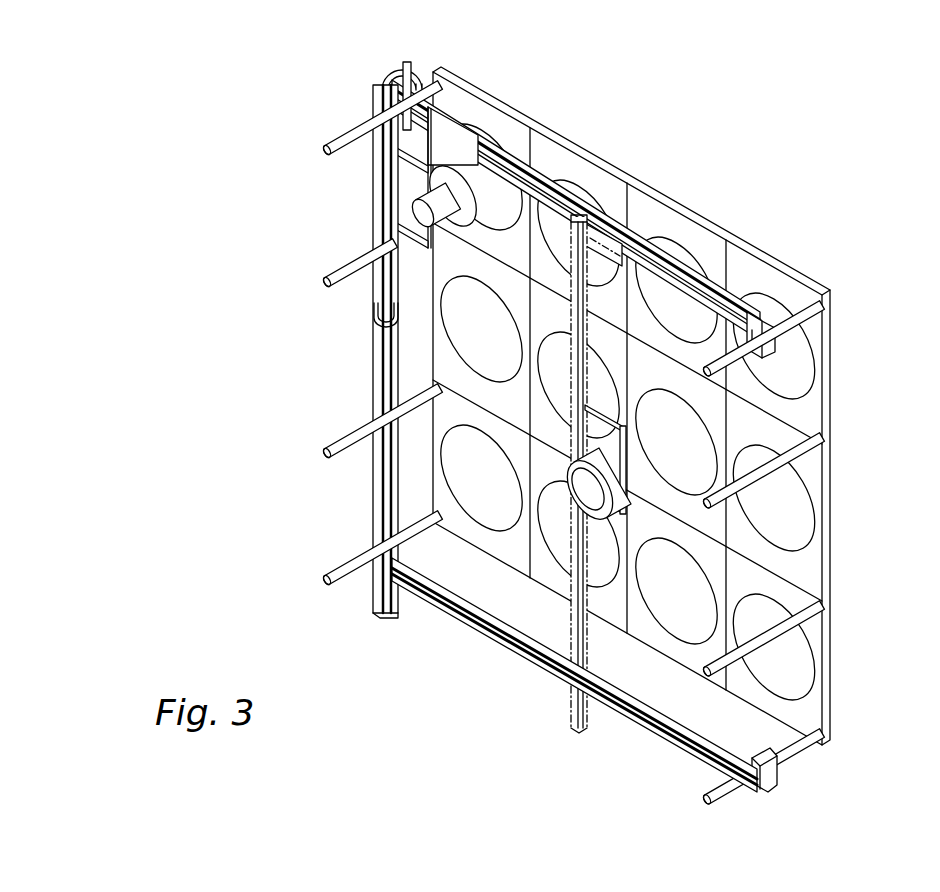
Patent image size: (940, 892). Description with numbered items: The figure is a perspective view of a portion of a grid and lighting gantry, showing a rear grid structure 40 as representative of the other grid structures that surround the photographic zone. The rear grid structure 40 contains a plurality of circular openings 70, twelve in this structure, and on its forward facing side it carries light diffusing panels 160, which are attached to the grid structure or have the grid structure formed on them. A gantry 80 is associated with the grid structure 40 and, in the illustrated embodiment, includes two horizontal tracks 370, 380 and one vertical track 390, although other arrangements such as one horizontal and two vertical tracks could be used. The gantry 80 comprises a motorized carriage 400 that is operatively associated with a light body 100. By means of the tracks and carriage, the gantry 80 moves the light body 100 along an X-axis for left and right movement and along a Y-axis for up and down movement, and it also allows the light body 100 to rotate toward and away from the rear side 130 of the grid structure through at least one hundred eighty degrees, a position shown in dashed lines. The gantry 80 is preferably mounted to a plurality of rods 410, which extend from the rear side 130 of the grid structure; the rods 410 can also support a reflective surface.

The rear grid structure 40 is at (807, 415).
The openings 70 is at (808, 542).
The gantry 80 is at (556, 150).
The light body 100 is at (463, 192).
The rear side of the grid structure 130 is at (672, 374).
The light diffusing panels 160 is at (792, 505).
The horizontal track 370 is at (700, 277).
The horizontal track 380 is at (670, 740).
The vertical track 390 is at (378, 373).
The motorized carriage 400 is at (396, 190).
The rods 410 is at (342, 140).